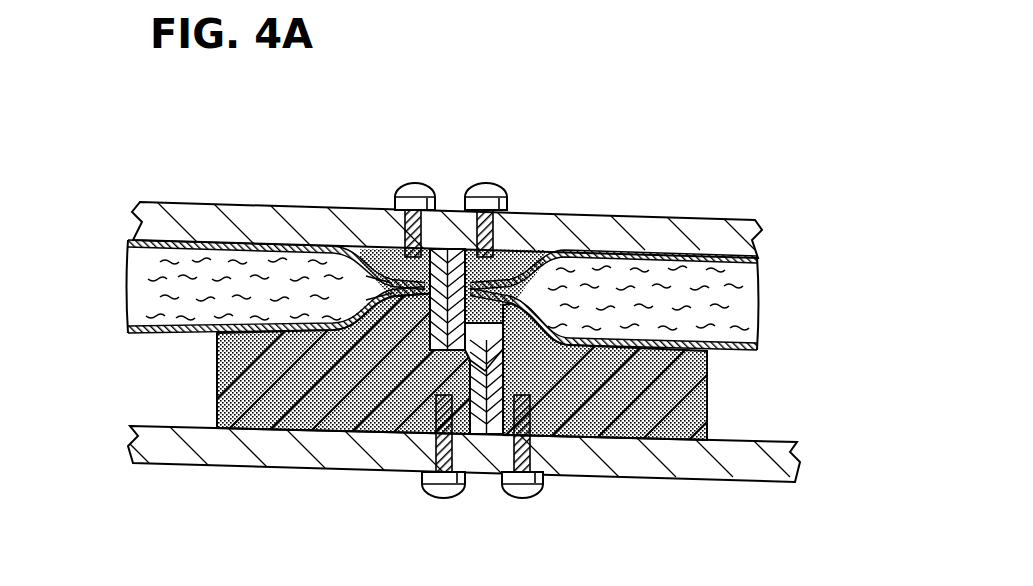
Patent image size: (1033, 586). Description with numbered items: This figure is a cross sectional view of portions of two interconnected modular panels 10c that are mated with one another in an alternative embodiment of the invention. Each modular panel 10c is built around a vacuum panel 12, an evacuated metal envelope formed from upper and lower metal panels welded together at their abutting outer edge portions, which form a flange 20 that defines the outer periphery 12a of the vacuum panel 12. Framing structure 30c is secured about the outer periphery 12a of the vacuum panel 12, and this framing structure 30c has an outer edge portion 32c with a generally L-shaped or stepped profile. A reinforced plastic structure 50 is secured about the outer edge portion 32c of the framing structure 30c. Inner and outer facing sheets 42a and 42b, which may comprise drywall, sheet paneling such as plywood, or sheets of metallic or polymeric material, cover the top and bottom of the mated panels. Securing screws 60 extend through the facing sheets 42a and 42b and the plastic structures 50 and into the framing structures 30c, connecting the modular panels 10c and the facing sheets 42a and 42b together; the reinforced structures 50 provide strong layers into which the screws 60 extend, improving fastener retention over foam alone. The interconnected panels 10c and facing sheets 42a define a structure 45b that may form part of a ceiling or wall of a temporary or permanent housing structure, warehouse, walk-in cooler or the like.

The modular panel 10c is at (449, 263).
The vacuum panel 12 is at (443, 240).
The outer periphery 12a is at (384, 245).
The flange 20 is at (373, 248).
The framing structure 30c is at (277, 393).
The outer edge portion 32c is at (526, 248).
The inner facing sheet 42a is at (773, 463).
The outer facing sheet 42b is at (727, 223).
The structure 45b is at (818, 276).
The reinforced plastic structure 50 is at (460, 249).
The securing screw 60 is at (426, 183).